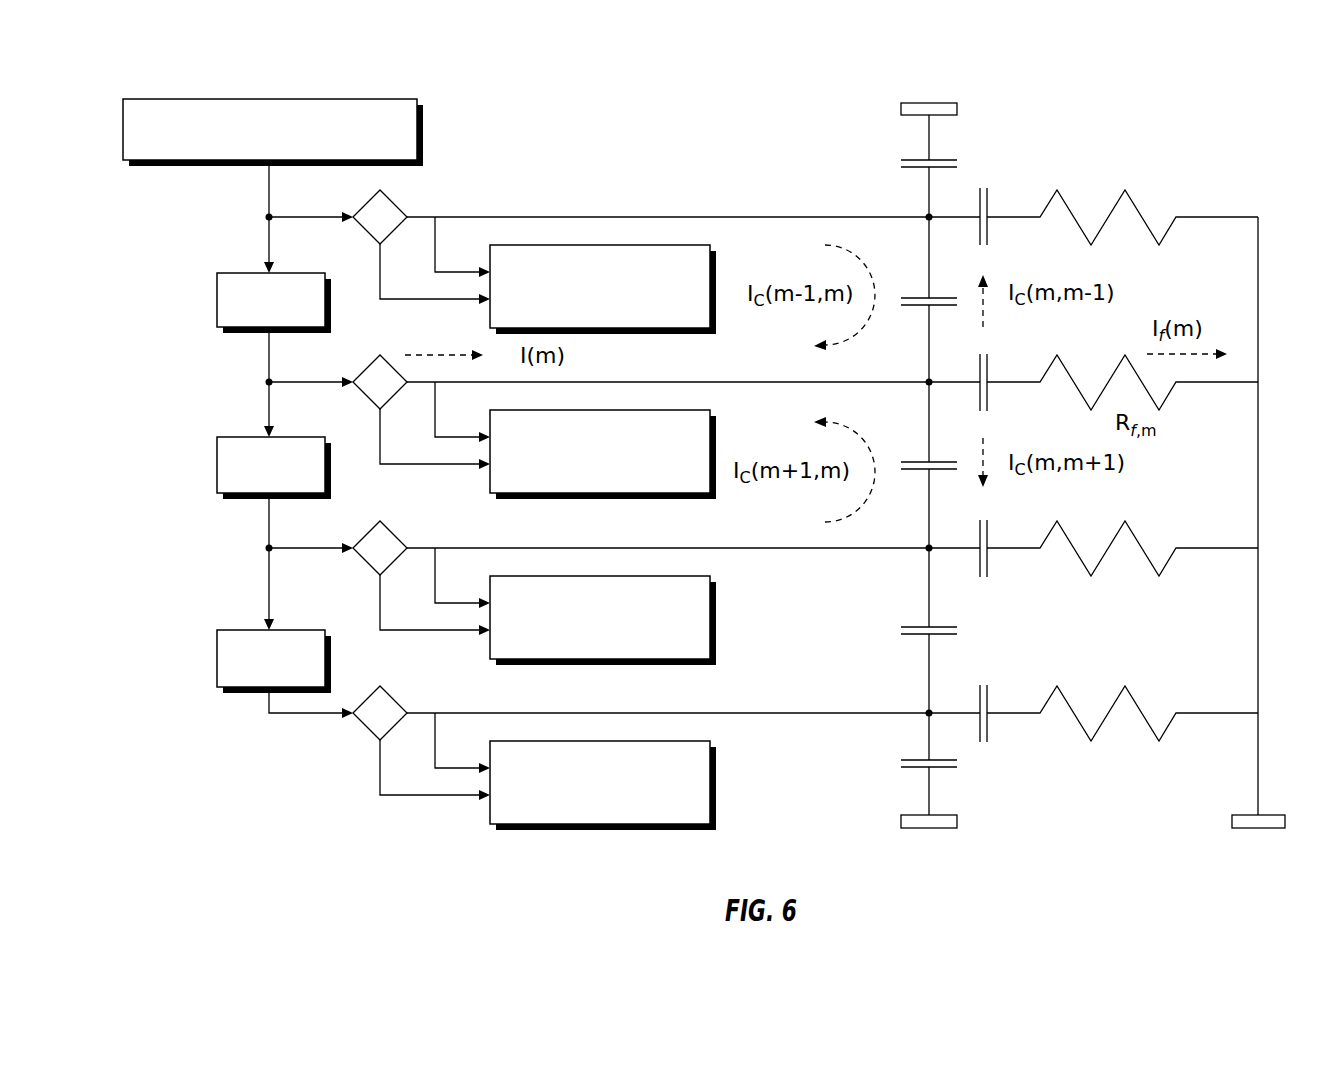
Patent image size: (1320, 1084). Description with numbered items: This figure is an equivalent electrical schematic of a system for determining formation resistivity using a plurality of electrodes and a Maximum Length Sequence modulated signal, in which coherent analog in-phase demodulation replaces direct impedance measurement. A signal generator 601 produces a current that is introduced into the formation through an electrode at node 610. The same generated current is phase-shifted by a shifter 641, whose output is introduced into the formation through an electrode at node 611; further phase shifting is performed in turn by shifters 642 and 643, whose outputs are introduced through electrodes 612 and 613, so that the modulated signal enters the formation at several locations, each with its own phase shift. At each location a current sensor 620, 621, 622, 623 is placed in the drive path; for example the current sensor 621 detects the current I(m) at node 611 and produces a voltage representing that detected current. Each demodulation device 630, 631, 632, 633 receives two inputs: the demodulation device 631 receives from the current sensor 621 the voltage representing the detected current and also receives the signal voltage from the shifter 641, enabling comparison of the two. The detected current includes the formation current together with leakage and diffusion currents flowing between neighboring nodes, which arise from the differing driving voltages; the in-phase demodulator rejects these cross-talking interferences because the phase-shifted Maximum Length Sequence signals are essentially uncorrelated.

The signal generator 601 is at (270, 99).
The node 610 is at (929, 217).
The node 611 is at (929, 382).
The electrode 612 is at (929, 548).
The electrode 613 is at (929, 713).
The current sensor 620 is at (366, 203).
The current sensor 621 is at (366, 368).
The current sensor 622 is at (366, 562).
The current sensor 623 is at (366, 728).
The demodulation device 630 is at (703, 277).
The demodulation device 631 is at (703, 442).
The demodulation device 632 is at (703, 608).
The demodulation device 633 is at (703, 773).
The shifter 641 is at (217, 298).
The shifter 642 is at (217, 465).
The shifter 643 is at (217, 662).